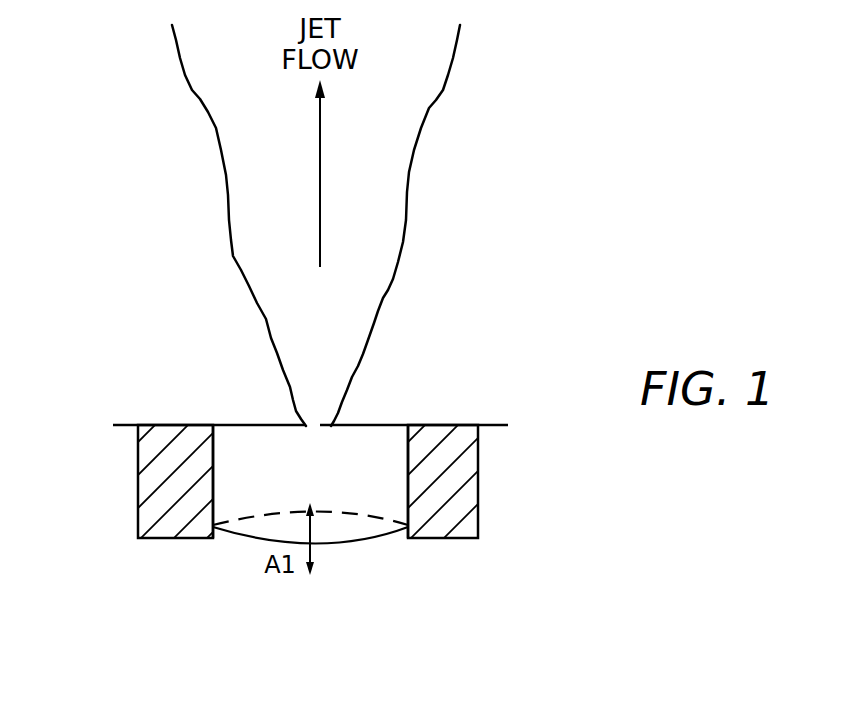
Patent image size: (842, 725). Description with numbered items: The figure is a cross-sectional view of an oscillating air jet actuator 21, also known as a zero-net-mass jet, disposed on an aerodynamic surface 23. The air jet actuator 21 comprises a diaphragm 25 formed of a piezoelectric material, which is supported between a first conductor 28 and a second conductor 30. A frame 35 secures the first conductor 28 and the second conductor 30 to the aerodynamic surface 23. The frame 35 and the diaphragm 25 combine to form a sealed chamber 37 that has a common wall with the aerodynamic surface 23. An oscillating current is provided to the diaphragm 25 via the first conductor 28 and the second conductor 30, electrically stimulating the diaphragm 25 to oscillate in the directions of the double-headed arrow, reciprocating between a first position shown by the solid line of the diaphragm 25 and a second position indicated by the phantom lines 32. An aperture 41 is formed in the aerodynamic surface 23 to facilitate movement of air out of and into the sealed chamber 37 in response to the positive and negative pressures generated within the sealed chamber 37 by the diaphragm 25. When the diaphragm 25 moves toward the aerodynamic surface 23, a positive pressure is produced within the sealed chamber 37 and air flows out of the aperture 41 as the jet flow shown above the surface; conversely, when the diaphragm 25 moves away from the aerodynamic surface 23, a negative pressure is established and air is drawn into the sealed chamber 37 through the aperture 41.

The oscillating air jet actuator 21 is at (477, 386).
The aerodynamic surface 23 is at (222, 425).
The diaphragm 25 is at (367, 540).
The first conductor 28 is at (213, 467).
The second conductor 30 is at (408, 450).
The phantom lines 32 is at (260, 513).
The frame 35 is at (138, 482).
The sealed chamber 37 is at (358, 494).
The aperture 41 is at (313, 427).